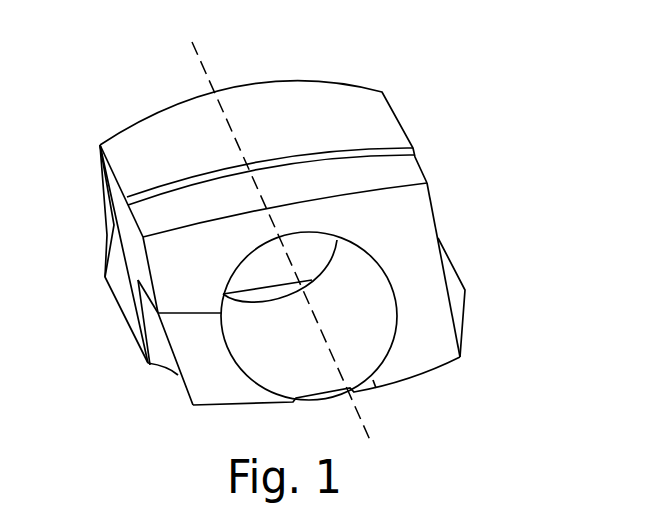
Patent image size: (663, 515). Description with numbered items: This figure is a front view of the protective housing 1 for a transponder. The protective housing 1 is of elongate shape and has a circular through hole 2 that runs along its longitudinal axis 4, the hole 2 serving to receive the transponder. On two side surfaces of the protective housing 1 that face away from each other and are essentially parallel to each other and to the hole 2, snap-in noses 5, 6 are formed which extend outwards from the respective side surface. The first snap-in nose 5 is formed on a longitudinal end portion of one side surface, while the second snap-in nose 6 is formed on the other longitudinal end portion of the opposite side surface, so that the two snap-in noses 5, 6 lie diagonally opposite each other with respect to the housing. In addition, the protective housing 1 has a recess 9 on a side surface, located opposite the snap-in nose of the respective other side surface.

The protective housing 1 is at (222, 155).
The hole 2 is at (357, 323).
The longitudinal axis 4 is at (213, 68).
The first snap-in nose 5 is at (457, 305).
The second snap-in nose 6 is at (106, 255).
The recess 9 is at (170, 387).